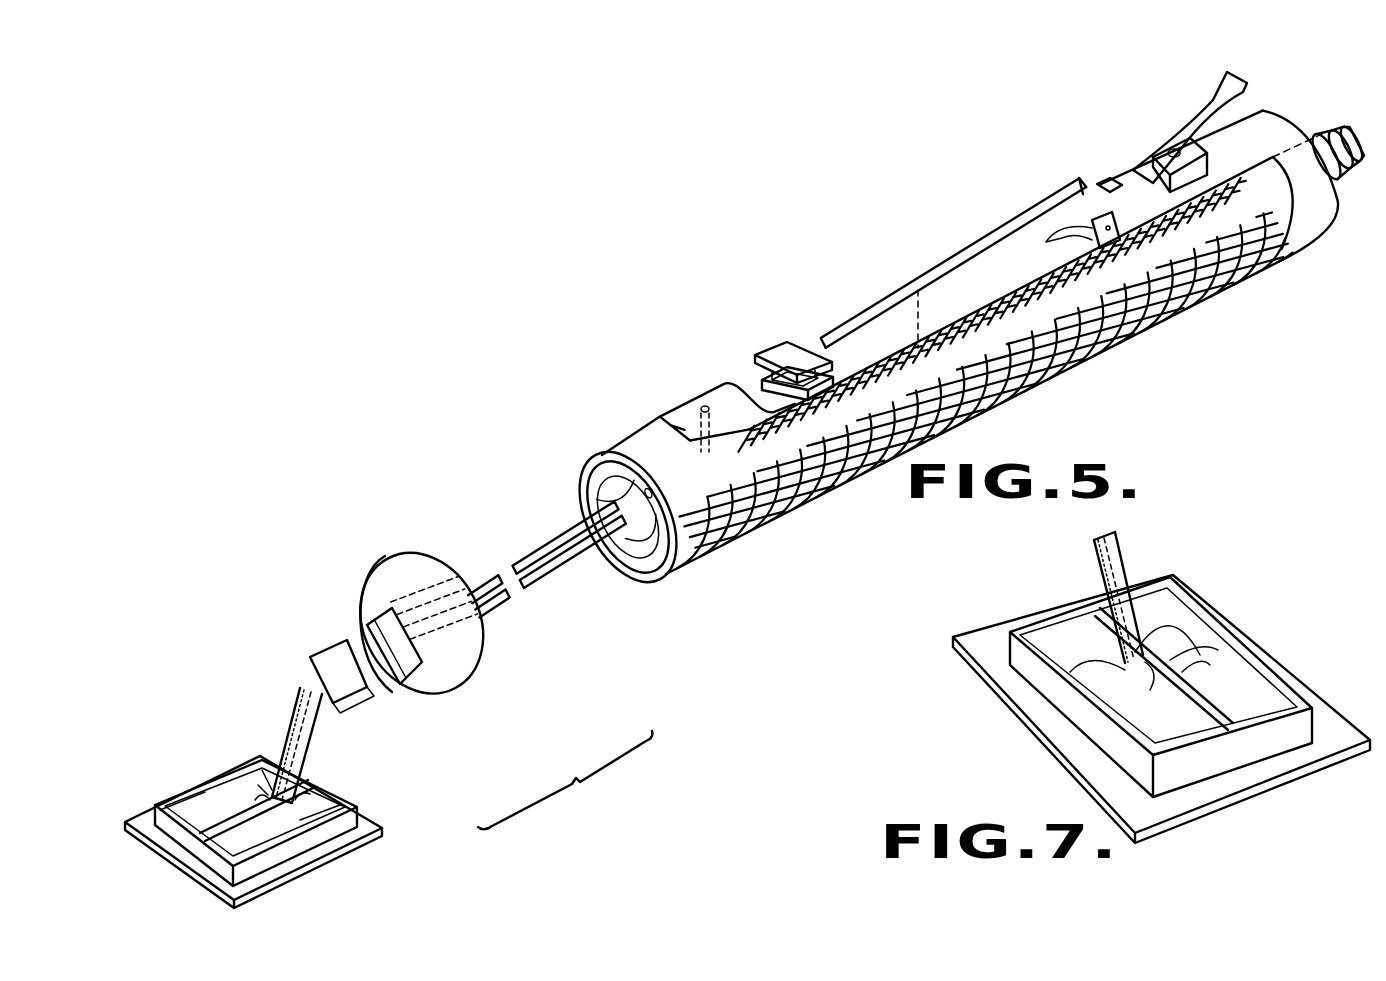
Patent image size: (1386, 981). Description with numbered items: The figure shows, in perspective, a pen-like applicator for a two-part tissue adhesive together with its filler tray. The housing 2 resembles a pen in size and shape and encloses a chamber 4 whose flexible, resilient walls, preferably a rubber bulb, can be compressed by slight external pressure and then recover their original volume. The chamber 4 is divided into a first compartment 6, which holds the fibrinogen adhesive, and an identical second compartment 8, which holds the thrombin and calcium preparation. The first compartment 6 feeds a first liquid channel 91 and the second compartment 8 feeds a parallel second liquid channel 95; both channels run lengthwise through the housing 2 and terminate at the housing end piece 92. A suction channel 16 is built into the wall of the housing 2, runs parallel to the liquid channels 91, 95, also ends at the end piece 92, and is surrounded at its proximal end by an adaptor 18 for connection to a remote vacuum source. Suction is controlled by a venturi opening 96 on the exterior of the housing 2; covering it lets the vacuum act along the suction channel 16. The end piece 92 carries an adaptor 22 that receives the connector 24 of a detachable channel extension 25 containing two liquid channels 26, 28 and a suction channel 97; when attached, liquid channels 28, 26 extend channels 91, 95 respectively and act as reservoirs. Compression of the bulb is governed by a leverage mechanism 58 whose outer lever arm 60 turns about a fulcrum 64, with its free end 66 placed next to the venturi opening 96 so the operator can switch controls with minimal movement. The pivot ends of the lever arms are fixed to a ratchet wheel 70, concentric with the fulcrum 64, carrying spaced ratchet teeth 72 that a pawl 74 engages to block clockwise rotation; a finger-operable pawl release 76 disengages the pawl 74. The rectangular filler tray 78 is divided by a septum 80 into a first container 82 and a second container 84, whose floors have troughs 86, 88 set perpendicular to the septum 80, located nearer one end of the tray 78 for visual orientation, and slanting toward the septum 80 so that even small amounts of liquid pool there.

In FIG. 5, the housing 2 is at (767, 522).
In FIG. 5, the chamber 4 is at (604, 472).
In FIG. 5, the first compartment 6 is at (589, 492).
In FIG. 5, the second compartment 8 is at (624, 562).
In FIG. 5, the suction channel 16 is at (530, 550).
In FIG. 5, the adaptor 18 is at (1330, 132).
In FIG. 5, the adaptor 22 is at (395, 570).
In FIG. 5, the connector 24 is at (335, 632).
In FIG. 5, the channel extension 25 is at (268, 726).
In FIG. 7, the channel extension 25 is at (1146, 560).
In FIG. 5, the liquid channel 26 is at (320, 728).
In FIG. 7, the liquid channel 26 is at (1186, 614).
In FIG. 5, the liquid channel 28 is at (290, 700).
In FIG. 7, the liquid channel 28 is at (1104, 582).
In FIG. 5, the leverage mechanism 58 is at (1018, 220).
In FIG. 5, the outer lever arm 60 is at (960, 252).
In FIG. 5, the fulcrum 64 is at (1066, 254).
In FIG. 5, the free end 66 is at (788, 344).
In FIG. 5, the ratchet wheel 70 is at (1079, 180).
In FIG. 5, the ratchet teeth 72 is at (1108, 178).
In FIG. 5, the pawl 74 is at (1113, 182).
In FIG. 5, the pawl release 76 is at (1194, 104).
In FIG. 5, the filler tray 78 is at (382, 776).
In FIG. 7, the filler tray 78 is at (1262, 630).
In FIG. 5, the septum 80 is at (306, 780).
In FIG. 7, the septum 80 is at (1216, 702).
In FIG. 5, the first container 82 is at (268, 768).
In FIG. 5, the second container 84 is at (352, 806).
In FIG. 5, the trough 86 is at (212, 790).
In FIG. 5, the trough 88 is at (215, 845).
In FIG. 5, the first liquid channel 91 is at (561, 530).
In FIG. 5, the housing end piece 92 is at (431, 550).
In FIG. 5, the second liquid channel 95 is at (531, 592).
In FIG. 5, the venturi opening 96 is at (705, 405).
In FIG. 5, the suction channel 97 is at (300, 682).
In FIG. 7, the suction channel 97 is at (1100, 548).